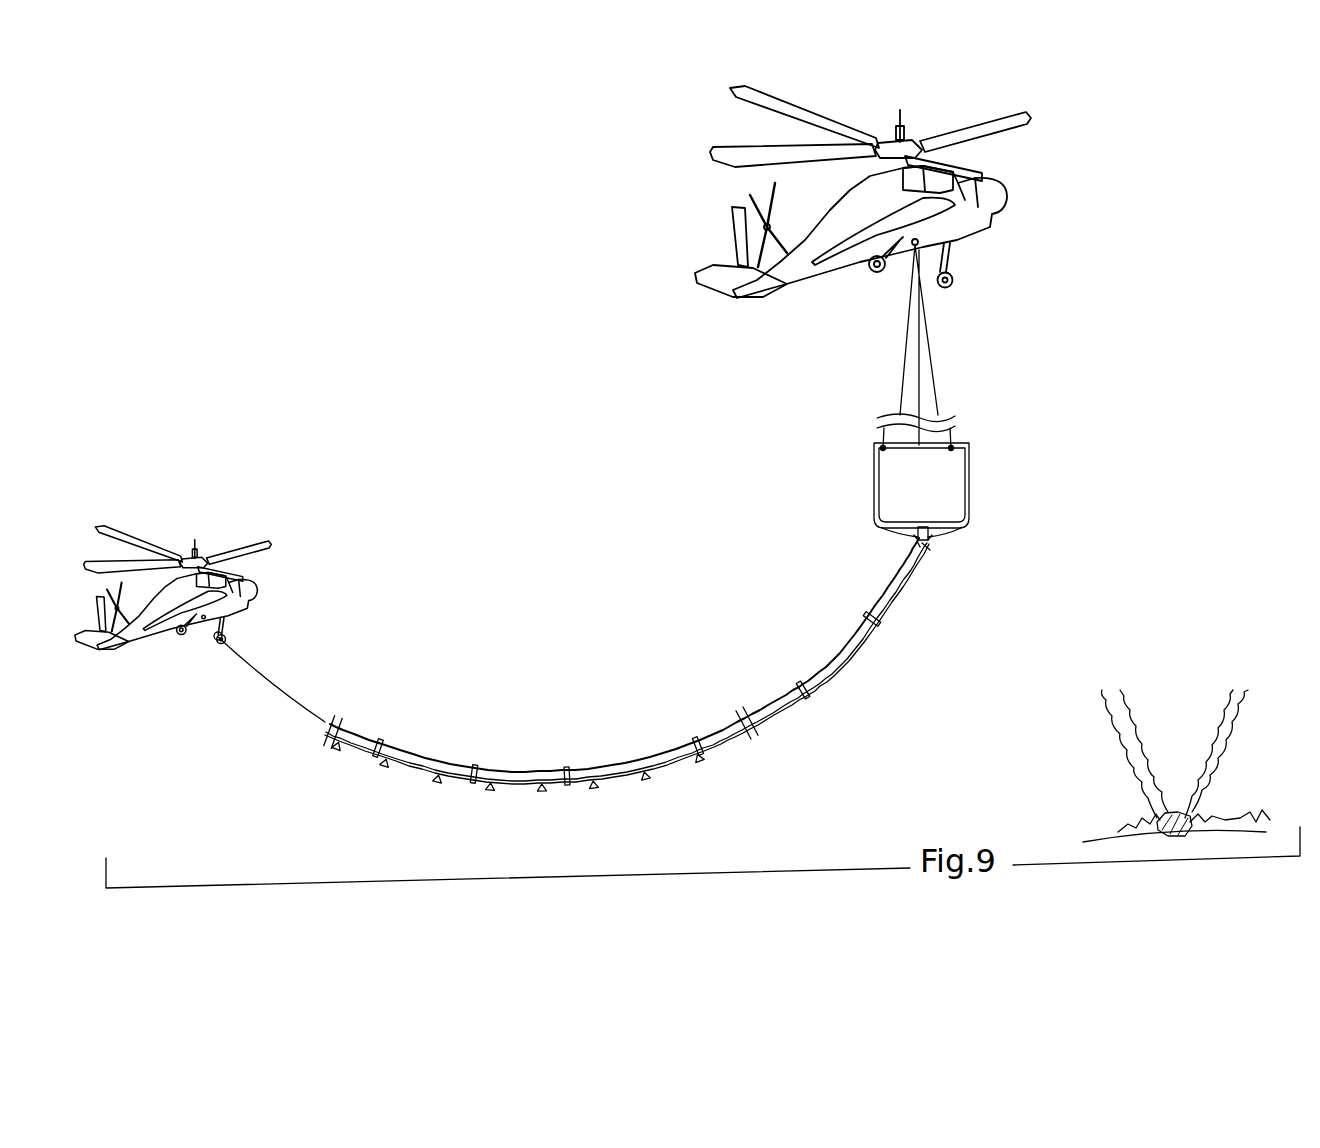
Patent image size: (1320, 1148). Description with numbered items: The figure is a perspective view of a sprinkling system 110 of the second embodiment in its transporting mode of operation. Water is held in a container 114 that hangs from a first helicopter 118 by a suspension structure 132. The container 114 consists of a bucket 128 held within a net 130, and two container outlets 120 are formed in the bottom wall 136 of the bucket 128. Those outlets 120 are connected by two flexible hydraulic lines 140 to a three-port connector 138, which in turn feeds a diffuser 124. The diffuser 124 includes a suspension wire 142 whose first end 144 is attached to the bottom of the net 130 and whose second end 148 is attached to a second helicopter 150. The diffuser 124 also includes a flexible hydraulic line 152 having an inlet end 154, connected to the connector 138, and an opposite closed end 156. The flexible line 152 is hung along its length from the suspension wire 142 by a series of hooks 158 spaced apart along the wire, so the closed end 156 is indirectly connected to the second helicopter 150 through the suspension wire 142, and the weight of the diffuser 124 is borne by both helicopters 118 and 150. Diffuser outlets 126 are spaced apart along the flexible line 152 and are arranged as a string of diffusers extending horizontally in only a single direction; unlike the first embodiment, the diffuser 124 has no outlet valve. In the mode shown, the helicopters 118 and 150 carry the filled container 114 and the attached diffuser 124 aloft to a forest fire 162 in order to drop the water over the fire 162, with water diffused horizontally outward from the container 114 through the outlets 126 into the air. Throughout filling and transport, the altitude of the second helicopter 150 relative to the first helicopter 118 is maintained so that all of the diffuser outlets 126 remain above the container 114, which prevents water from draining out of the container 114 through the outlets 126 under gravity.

The sprinkling system 110 is at (925, 118).
The helicopter 118 is at (965, 172).
The suspension structure 132 is at (941, 351).
The container 114 is at (935, 506).
The bucket 128 is at (966, 460).
The net 130 is at (968, 477).
The bottom wall 136 is at (878, 528).
The container outlets 120 is at (892, 530).
The flexible hydraulic lines 140 is at (917, 535).
The first end 144 is at (917, 542).
The 3-port connector 138 is at (928, 540).
The inlet end 154 is at (928, 545).
The diffuser 124 is at (610, 682).
The flexible hydraulic line 152 is at (781, 711).
The diffuser outlets 126 is at (695, 762).
The hooks 158 is at (567, 776).
The closed end 156 is at (317, 728).
The suspension wire 142 is at (267, 675).
The second end 148 is at (202, 615).
The second helicopter 150 is at (233, 572).
The forest fire 162 is at (1186, 818).